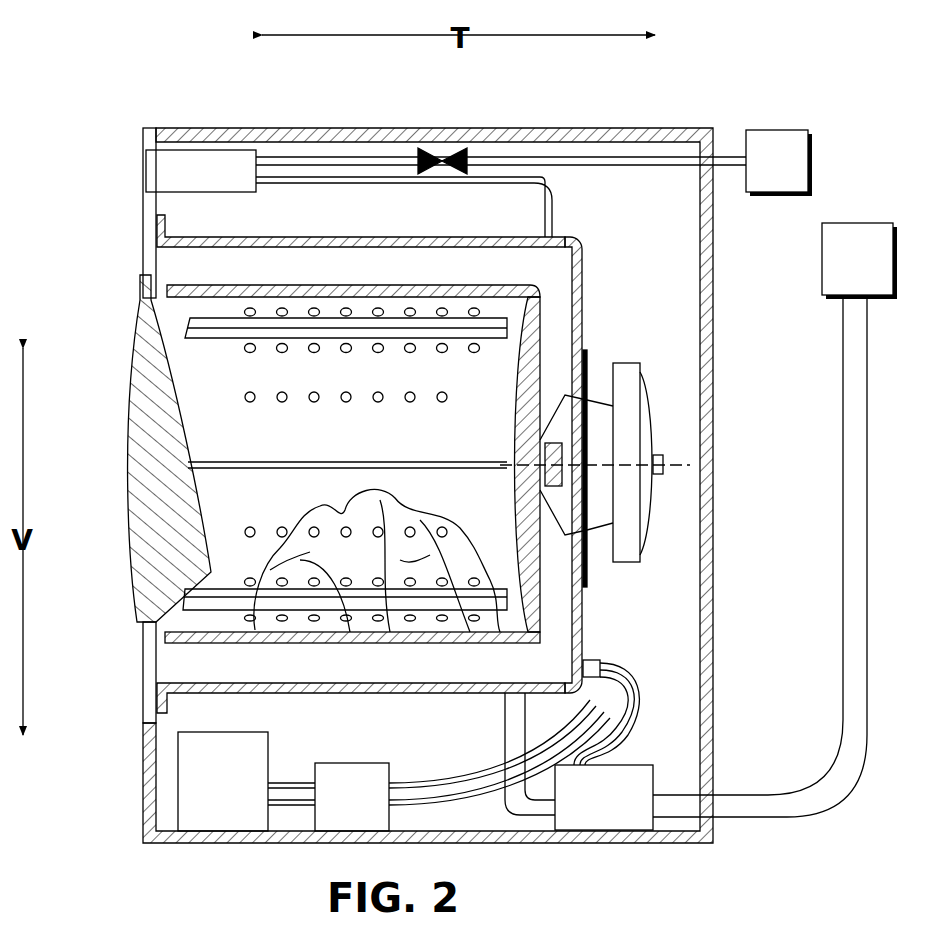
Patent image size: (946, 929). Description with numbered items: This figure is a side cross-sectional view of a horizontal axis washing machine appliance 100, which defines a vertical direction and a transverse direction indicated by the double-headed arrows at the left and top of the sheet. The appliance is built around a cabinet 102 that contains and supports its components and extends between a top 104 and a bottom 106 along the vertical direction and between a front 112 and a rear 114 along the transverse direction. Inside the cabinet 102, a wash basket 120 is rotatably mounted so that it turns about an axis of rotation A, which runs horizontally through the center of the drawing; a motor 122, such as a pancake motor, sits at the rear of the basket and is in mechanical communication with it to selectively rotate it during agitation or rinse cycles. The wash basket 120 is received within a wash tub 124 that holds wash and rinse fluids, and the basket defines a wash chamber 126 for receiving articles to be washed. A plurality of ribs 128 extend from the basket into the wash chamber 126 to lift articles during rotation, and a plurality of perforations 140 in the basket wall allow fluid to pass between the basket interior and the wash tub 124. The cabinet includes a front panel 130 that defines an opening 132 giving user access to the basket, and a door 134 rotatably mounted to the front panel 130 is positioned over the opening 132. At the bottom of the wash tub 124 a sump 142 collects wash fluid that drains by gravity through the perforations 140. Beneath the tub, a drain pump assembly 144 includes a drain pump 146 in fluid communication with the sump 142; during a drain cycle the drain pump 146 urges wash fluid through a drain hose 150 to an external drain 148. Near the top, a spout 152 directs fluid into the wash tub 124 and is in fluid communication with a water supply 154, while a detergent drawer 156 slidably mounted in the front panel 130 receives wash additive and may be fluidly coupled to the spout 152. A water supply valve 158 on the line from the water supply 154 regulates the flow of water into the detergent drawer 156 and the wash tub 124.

The washing machine appliance 100 is at (173, 64).
The cabinet 102 is at (713, 468).
The top 104 is at (722, 126).
The bottom 106 is at (740, 836).
The front 112 is at (137, 129).
The rear 114 is at (715, 292).
The wash basket 120 is at (347, 284).
The motor 122 is at (628, 405).
The wash tub 124 is at (580, 302).
The wash chamber 126 is at (212, 422).
The ribs 128 is at (287, 460).
The front panel 130 is at (150, 668).
The opening 132 is at (175, 320).
The door 134 is at (145, 520).
The perforations 140 is at (408, 400).
The sump 142 is at (545, 652).
The drain pump assembly 144 is at (674, 718).
The drain pump 146 is at (579, 816).
The external drain 148 is at (837, 276).
The drain hose 150 is at (852, 602).
The spout 152 is at (558, 208).
The water supply 154 is at (757, 176).
The detergent drawer 156 is at (213, 160).
The water supply valve 158 is at (447, 150).
The axis of rotation A is at (680, 462).